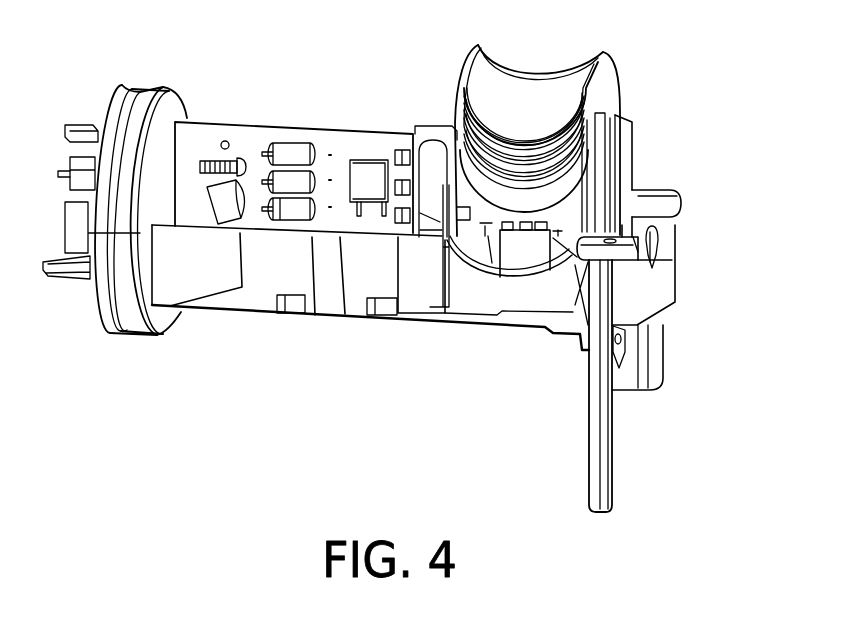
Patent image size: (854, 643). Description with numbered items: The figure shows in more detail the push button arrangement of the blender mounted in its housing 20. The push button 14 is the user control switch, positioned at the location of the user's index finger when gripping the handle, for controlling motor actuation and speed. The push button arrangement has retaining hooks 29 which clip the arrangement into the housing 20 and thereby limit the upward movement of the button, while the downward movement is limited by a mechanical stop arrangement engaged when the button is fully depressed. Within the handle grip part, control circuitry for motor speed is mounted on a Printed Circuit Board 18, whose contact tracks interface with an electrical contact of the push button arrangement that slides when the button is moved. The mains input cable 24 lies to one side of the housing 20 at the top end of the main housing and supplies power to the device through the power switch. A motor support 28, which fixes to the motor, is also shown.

The push button 14 is at (532, 78).
The Printed Circuit Board 18 is at (236, 124).
The housing 20 is at (622, 155).
The mains input cable 24 is at (614, 466).
The motor support 28 is at (136, 325).
The retaining hooks 29 is at (558, 233).